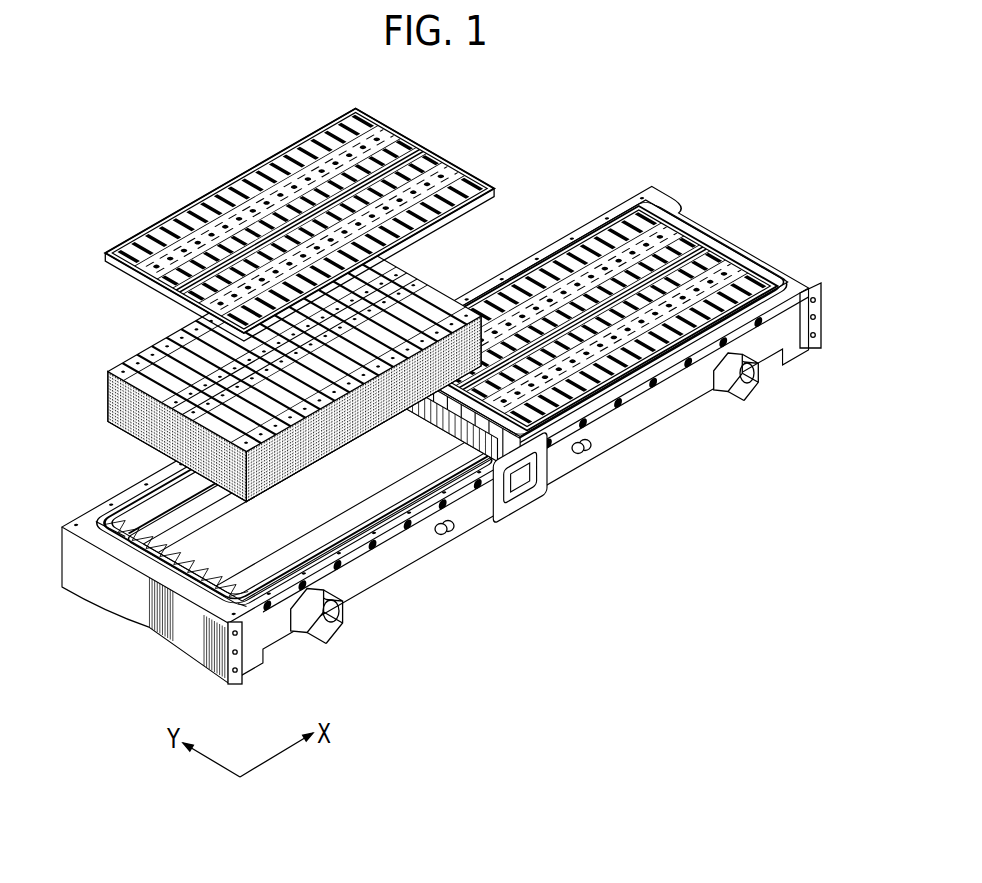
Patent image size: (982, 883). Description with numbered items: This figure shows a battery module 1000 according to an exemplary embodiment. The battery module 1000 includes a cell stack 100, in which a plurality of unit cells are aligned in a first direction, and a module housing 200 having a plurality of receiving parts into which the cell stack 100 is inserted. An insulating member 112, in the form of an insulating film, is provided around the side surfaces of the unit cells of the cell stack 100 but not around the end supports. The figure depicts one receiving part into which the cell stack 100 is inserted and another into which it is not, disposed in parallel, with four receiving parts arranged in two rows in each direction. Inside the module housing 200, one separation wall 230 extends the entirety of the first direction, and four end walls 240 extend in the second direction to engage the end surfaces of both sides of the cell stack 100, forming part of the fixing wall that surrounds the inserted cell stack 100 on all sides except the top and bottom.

The battery module 1000 is at (435, 397).
The cell stack 100 is at (272, 362).
The insulating member 112 is at (328, 435).
The module housing 200 is at (441, 436).
The separation wall 230 is at (300, 517).
The end wall 240 is at (537, 457).